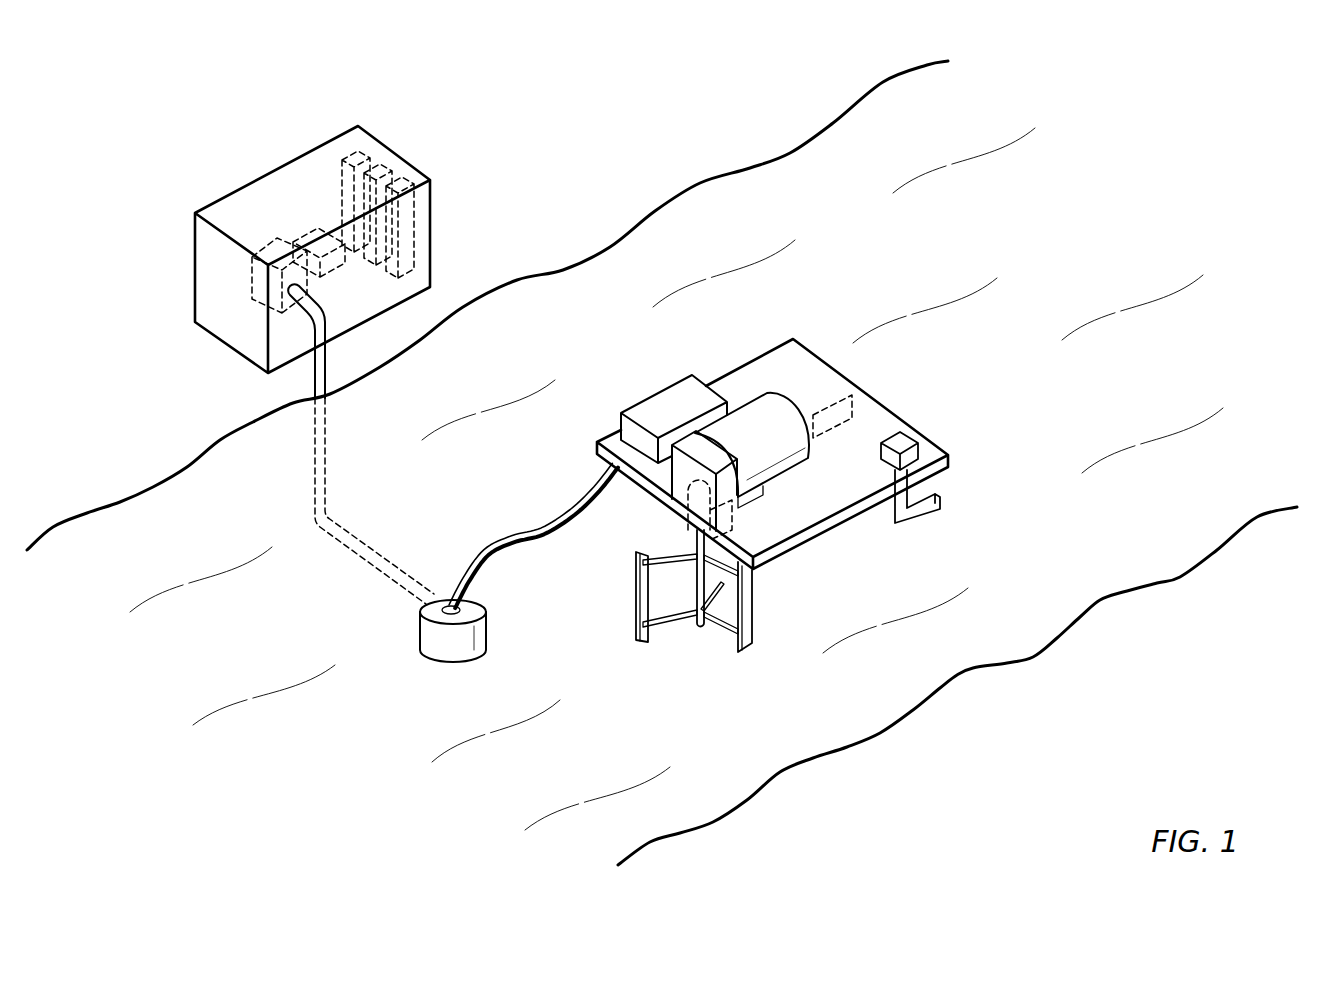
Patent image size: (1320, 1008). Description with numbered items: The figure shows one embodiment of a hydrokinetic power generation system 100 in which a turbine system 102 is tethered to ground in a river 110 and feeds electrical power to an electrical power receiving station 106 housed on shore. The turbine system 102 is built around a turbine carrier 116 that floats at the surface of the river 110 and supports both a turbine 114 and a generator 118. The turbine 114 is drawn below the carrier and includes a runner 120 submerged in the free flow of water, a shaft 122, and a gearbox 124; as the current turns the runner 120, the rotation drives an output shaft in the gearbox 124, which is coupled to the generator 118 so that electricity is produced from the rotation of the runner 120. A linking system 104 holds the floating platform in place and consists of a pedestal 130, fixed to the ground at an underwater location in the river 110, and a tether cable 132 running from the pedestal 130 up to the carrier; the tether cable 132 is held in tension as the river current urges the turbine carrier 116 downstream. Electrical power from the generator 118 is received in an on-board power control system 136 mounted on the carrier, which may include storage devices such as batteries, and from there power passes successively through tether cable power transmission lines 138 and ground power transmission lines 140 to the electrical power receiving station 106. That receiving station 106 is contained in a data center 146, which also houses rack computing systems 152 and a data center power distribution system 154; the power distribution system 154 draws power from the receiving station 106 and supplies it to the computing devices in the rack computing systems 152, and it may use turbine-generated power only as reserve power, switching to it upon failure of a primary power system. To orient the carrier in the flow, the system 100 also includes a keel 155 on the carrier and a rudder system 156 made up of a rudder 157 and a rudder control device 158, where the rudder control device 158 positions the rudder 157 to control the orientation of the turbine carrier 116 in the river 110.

The hydrokinetic power generation system 100 is at (566, 178).
The turbine system 102 is at (896, 378).
The linking system 104 is at (540, 454).
The electrical power receiving station 106 is at (266, 246).
The river 110 is at (1036, 571).
The turbine 114 is at (762, 585).
The turbine carrier 116 is at (750, 368).
The generator 118 is at (773, 447).
The runner 120 is at (753, 613).
The shaft 122 is at (697, 547).
The gearbox 124 is at (673, 484).
The pedestal 130 is at (431, 653).
The tether cable 132 is at (525, 543).
The on-board power control system 136 is at (690, 414).
The tether cable power transmission lines 138 is at (503, 536).
The ground power transmission lines 140 is at (372, 554).
The data center 146 is at (278, 175).
The rack computing systems 152 is at (388, 172).
The data center power distribution system 154 is at (309, 232).
The keel 155 is at (851, 396).
The rudder system 156 is at (967, 466).
The rudder 157 is at (924, 516).
The rudder control device 158 is at (901, 430).